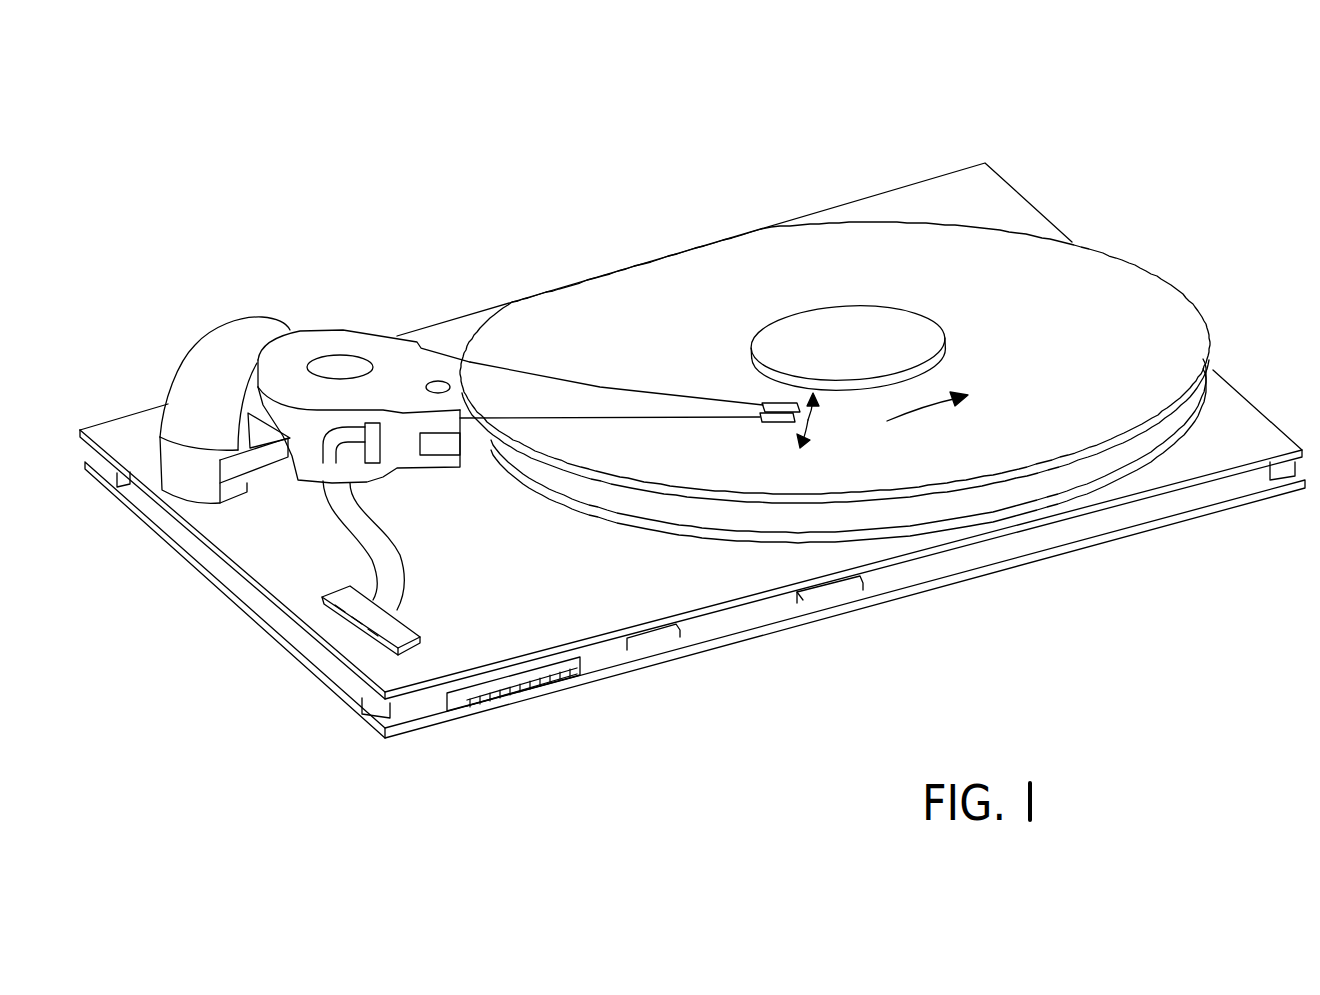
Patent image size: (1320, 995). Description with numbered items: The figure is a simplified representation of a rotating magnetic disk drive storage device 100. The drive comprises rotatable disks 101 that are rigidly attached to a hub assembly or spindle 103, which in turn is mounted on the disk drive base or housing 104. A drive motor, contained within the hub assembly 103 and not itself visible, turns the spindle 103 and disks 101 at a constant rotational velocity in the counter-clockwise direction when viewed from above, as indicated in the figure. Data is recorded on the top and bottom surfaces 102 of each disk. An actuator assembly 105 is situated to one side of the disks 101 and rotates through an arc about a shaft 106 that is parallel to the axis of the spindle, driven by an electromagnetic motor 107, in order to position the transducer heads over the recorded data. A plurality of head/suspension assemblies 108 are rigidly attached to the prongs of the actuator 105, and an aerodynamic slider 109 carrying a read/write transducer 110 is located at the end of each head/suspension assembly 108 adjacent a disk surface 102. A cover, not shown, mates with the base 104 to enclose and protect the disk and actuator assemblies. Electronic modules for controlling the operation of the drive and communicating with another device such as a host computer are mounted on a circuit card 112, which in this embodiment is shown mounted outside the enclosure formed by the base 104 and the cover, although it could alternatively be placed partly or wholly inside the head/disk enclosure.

The rotating magnetic disk drive storage device 100 is at (691, 382).
The rotatable disks 101 is at (1170, 415).
The disk surfaces 102 is at (790, 247).
The hub assembly or spindle 103 is at (887, 330).
The disk drive base or housing 104 is at (1242, 402).
The actuator assembly 105 is at (363, 334).
The shaft 106 is at (340, 368).
The electromagnetic motor 107 is at (170, 397).
The head/suspension assemblies 108 is at (517, 390).
The aerodynamic slider 109 is at (787, 425).
The read/write transducer 110 is at (808, 420).
The circuit card 112 is at (737, 648).